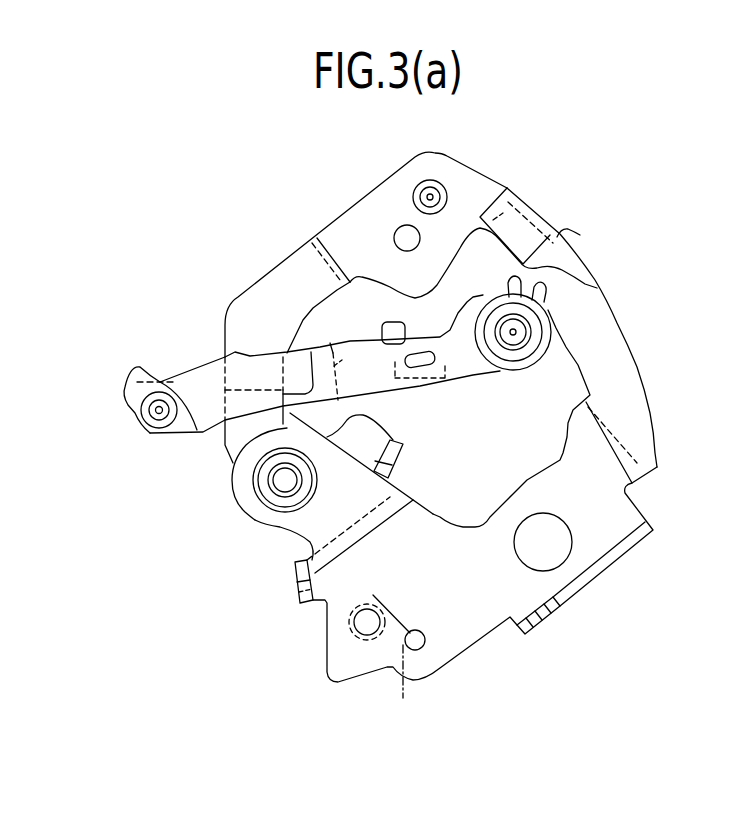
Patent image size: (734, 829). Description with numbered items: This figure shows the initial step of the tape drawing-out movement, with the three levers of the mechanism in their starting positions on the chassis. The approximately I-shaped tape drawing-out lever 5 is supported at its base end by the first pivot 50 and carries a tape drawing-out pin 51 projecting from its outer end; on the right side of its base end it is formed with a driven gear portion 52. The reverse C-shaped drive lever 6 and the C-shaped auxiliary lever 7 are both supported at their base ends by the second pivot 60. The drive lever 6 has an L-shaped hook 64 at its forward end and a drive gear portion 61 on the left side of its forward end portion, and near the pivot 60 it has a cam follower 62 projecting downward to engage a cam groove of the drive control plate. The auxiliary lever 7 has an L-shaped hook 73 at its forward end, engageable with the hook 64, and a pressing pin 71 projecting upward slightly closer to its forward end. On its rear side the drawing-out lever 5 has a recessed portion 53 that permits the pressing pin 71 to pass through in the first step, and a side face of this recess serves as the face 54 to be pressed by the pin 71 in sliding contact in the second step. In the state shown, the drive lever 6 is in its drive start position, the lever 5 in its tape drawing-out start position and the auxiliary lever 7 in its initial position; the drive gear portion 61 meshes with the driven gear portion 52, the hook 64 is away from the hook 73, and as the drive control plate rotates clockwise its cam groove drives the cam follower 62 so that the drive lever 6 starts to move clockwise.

The tape drawing-out lever 5 is at (197, 382).
The drive lever 6 is at (612, 330).
The auxiliary lever 7 is at (377, 197).
The first pivot 50 is at (513, 337).
The tape drawing-out pin 51 is at (159, 413).
The driven gear portion 52 is at (509, 285).
The recessed portion 53 is at (346, 344).
The face to be pressed 54 is at (408, 380).
The second pivot 60 is at (285, 487).
The drive gear portion 61 is at (596, 281).
The cam follower 62 is at (350, 638).
The L-shaped hook 64 is at (508, 187).
The pressing pin 71 is at (430, 194).
The L-shaped hook 73 is at (568, 235).